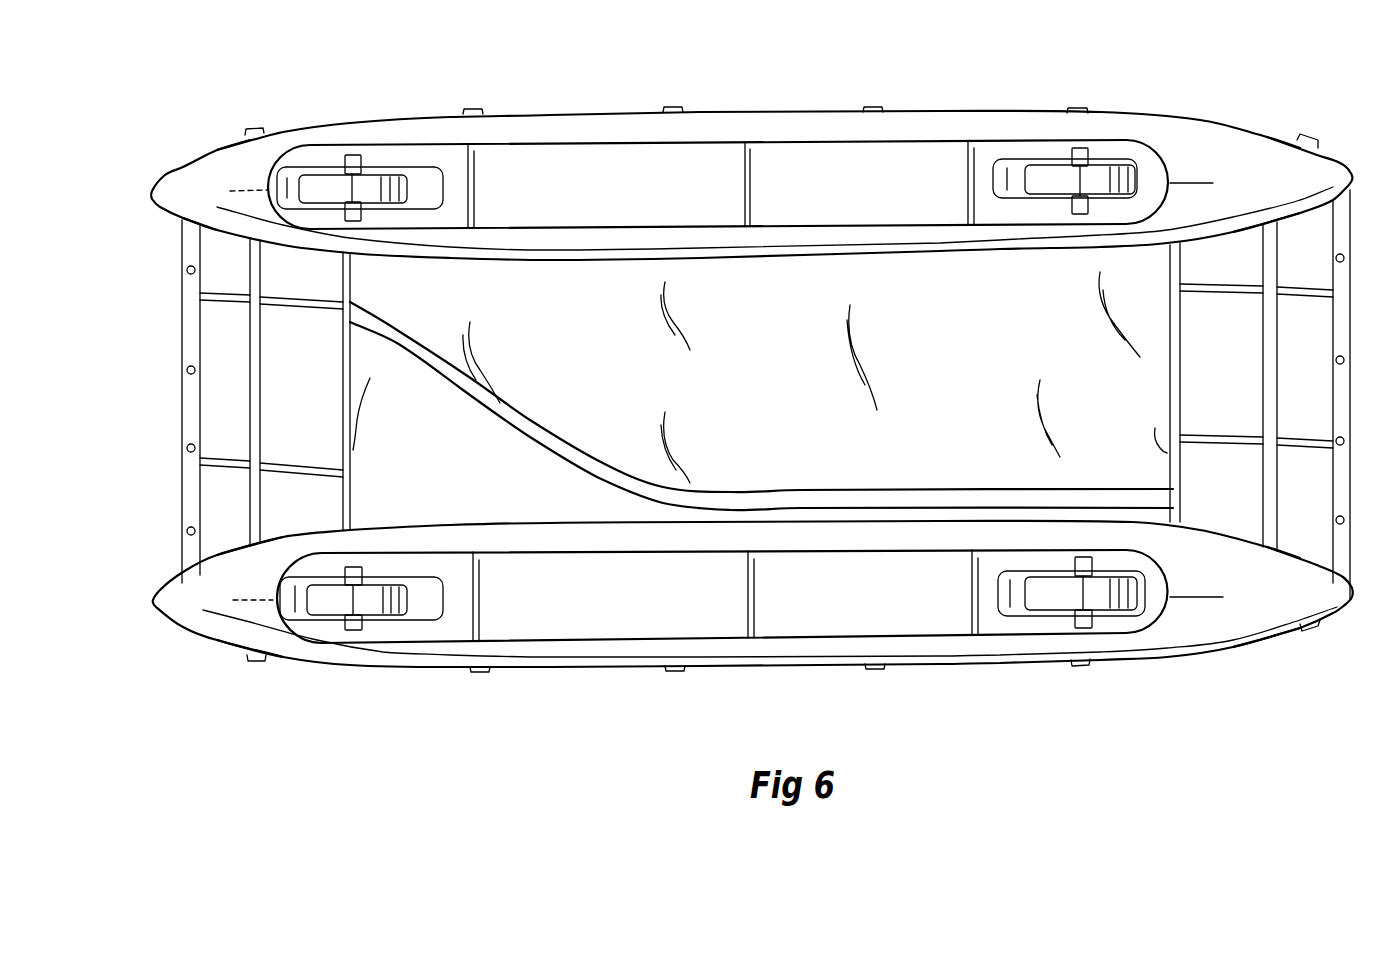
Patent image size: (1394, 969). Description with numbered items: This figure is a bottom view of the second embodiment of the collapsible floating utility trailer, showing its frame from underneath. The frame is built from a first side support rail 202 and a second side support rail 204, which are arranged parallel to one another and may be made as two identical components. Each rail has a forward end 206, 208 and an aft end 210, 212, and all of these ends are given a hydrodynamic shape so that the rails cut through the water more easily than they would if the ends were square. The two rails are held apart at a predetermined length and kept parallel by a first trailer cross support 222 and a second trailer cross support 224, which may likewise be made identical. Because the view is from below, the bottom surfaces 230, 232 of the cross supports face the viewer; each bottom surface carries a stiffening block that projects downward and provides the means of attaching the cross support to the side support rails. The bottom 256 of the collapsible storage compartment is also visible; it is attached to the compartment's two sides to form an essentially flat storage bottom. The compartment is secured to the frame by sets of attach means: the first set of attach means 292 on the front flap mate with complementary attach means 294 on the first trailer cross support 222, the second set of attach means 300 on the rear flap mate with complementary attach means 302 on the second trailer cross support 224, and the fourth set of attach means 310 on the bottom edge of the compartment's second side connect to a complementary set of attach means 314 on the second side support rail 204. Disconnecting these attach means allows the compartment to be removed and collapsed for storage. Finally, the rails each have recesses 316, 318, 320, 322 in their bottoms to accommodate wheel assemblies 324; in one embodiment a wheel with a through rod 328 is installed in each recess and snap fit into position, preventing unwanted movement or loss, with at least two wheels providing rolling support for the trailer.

The first side support rail 202 is at (567, 143).
The second side support rail 204 is at (540, 666).
The forward end of first side support rail 206 is at (152, 185).
The forward end of second side support rail 208 is at (190, 636).
The aft end of first side support rail 210 is at (1336, 162).
The aft end of second side support rail 212 is at (1340, 610).
The first trailer cross support 222 is at (330, 518).
The second trailer cross support 224 is at (1102, 364).
The bottom surface of first trailer cross support 230 is at (761, 416).
The bottom surface of second trailer cross support 232 is at (1198, 513).
The bottom of collapsible storage compartment 256 is at (1148, 270).
The first set of attach means 292 is at (187, 372).
The complementary attach means 294 is at (187, 530).
The second set of attach means 300 is at (258, 128).
The complementary attach means 302 is at (1333, 520).
The fourth set of attach means 310 is at (262, 663).
The complementary set of attach means 314 is at (1077, 667).
The recess 316 is at (432, 190).
The recess 318 is at (1147, 190).
The recess 320 is at (432, 612).
The recess 322 is at (1002, 615).
The wheel assembly 324 is at (398, 178).
The through rod 328 is at (354, 155).